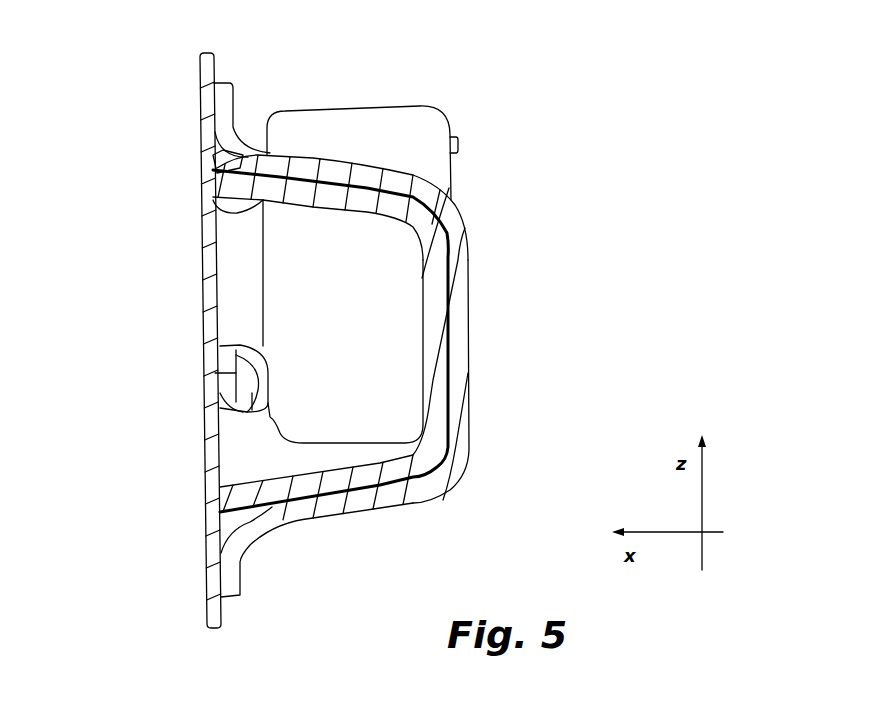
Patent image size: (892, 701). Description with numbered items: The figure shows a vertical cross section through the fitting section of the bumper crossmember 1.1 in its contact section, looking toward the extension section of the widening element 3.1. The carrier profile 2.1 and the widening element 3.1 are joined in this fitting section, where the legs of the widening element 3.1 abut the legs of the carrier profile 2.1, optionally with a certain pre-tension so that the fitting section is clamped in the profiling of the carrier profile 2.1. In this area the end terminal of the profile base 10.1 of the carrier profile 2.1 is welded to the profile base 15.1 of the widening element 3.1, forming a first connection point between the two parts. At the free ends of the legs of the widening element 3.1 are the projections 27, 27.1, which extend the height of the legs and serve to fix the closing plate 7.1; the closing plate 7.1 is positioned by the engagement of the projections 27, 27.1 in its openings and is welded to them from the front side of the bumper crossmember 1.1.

The bumper crossmember 1.1 is at (527, 217).
The carrier profile 2.1 is at (311, 153).
The widening element 3.1 is at (247, 466).
The closing plate 7.1 is at (203, 407).
The profile base 10.1 is at (472, 398).
The profile base 15.1 is at (420, 277).
The projection 27 is at (197, 190).
The projection 27.1 is at (204, 493).